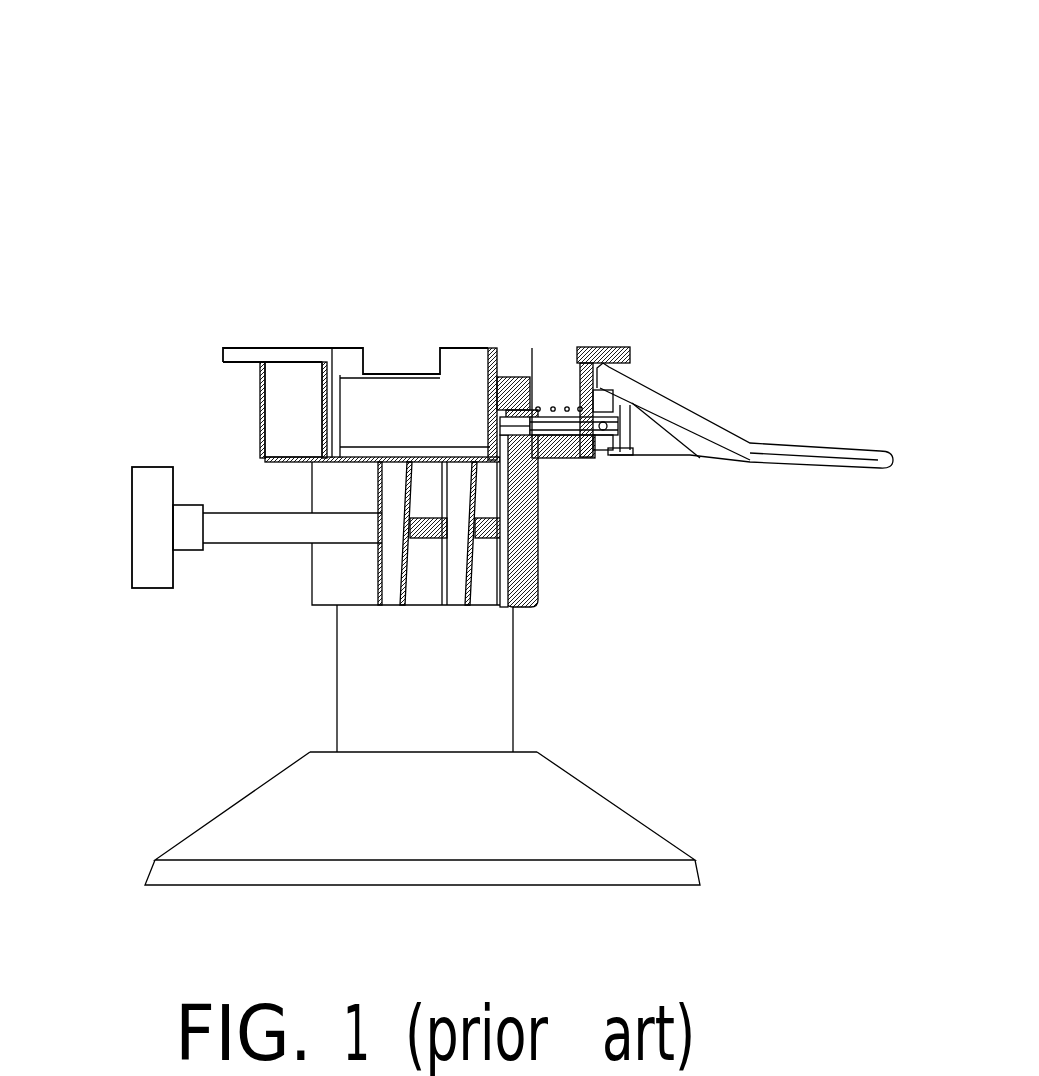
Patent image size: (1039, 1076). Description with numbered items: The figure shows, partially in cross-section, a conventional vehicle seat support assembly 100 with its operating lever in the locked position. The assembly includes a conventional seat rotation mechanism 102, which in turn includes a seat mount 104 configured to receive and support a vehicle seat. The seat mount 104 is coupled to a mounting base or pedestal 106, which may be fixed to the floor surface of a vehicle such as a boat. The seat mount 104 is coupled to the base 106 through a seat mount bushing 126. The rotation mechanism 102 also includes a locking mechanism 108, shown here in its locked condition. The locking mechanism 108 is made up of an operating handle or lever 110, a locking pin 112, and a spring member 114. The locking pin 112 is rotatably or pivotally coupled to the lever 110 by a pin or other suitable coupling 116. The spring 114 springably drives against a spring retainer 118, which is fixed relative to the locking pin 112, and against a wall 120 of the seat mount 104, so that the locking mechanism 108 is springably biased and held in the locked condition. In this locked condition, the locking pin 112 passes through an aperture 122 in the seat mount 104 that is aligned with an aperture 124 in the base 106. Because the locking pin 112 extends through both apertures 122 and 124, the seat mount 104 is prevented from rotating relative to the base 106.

The vehicle seat support assembly 100 is at (210, 95).
The seat rotation mechanism 102 is at (235, 320).
The seat mount 104 is at (408, 397).
The mounting base or pedestal 106 is at (362, 693).
The locking mechanism 108 is at (662, 502).
The operating handle or lever 110 is at (668, 417).
The locking pin 112 is at (543, 463).
The spring member 114 is at (553, 405).
The pin or coupling 116 is at (622, 405).
The spring retainer 118 is at (534, 405).
The wall 120 is at (572, 402).
The aperture in seat mount 122 is at (550, 455).
The aperture in base 124 is at (537, 332).
The seat mount bushing 126 is at (516, 607).